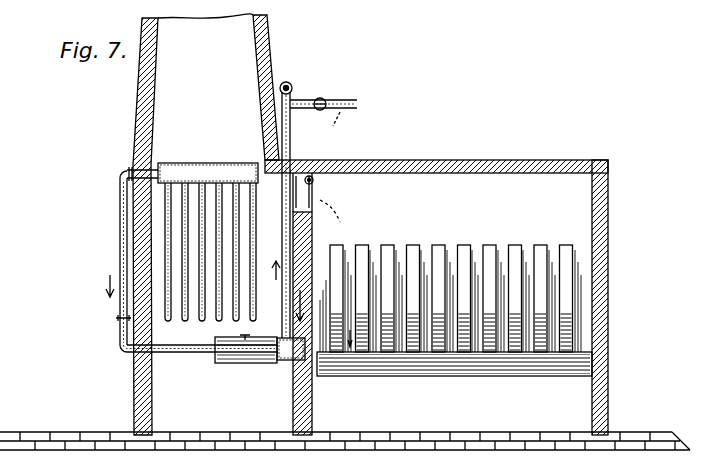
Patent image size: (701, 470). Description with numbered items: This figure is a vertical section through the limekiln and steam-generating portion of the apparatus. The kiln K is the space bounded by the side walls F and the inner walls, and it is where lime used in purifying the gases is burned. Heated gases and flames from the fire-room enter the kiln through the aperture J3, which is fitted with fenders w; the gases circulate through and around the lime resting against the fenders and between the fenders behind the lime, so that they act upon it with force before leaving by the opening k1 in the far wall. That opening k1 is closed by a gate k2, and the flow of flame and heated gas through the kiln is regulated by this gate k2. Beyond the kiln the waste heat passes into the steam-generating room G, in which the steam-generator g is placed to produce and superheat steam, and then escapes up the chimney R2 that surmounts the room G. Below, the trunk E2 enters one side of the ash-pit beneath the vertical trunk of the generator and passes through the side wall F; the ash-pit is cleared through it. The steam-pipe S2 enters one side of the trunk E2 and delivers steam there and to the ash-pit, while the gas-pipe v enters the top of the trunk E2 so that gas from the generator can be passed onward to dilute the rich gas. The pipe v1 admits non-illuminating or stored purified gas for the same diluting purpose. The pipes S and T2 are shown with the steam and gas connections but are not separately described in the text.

The chimney R2 is at (206, 224).
The side wall F is at (372, 289).
The opening k1 is at (302, 304).
The gate k2 is at (322, 199).
The gas-pipe v is at (284, 205).
The pipe v1 is at (323, 104).
The steam-generator g is at (192, 173).
The steam-generating room G is at (210, 252).
The supply pipe S is at (113, 258).
The steam-pipe S2 is at (198, 341).
The heat exchanger T2 is at (246, 343).
The trunk E2 is at (294, 311).
The kiln K is at (450, 269).
The fenders w is at (419, 319).
The aperture J3 is at (454, 364).